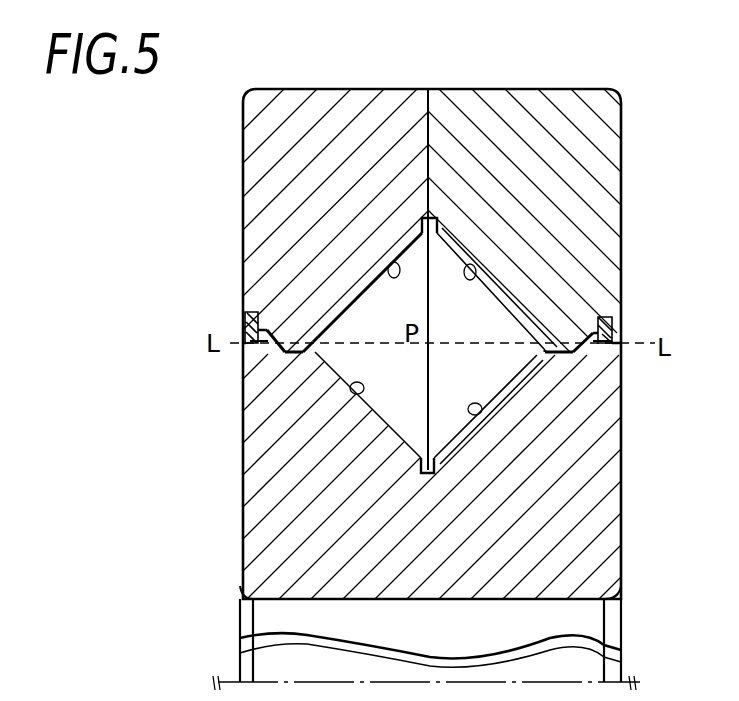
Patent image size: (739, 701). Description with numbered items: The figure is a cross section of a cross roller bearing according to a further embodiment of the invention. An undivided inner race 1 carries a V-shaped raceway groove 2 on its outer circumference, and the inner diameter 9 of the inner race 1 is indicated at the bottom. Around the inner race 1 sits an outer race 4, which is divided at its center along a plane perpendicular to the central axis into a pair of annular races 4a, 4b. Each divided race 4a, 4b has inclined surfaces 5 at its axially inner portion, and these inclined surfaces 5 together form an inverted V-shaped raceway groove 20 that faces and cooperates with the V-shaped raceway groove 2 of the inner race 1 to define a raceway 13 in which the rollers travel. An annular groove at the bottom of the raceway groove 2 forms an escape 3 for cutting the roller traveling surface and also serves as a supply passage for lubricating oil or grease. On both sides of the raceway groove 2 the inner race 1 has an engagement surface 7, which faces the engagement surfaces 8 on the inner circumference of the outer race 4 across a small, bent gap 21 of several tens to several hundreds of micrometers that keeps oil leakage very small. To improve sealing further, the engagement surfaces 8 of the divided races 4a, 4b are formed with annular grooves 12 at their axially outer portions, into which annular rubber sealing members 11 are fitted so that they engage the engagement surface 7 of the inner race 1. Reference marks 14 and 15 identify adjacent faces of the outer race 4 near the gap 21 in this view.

The inner race 1 is at (556, 540).
The V-shaped raceway groove 2 is at (410, 425).
The escape 3 is at (421, 474).
The outer race 4 is at (622, 137).
The divided annular race 4a is at (578, 188).
The divided annular race 4b is at (283, 205).
The inclined surfaces 5 is at (392, 263).
The engagement surface 7 is at (272, 360).
The engagement surfaces 8 is at (262, 360).
The inner diameter 9 is at (522, 602).
The sealing members 11 is at (244, 343).
The annular grooves 12 is at (258, 318).
The raceway 13 is at (360, 312).
The horizontal lip face 14 is at (307, 353).
The lip transition face 15 is at (303, 339).
The inverted V-shaped raceway groove 20 is at (440, 262).
The gap 21 is at (250, 338).